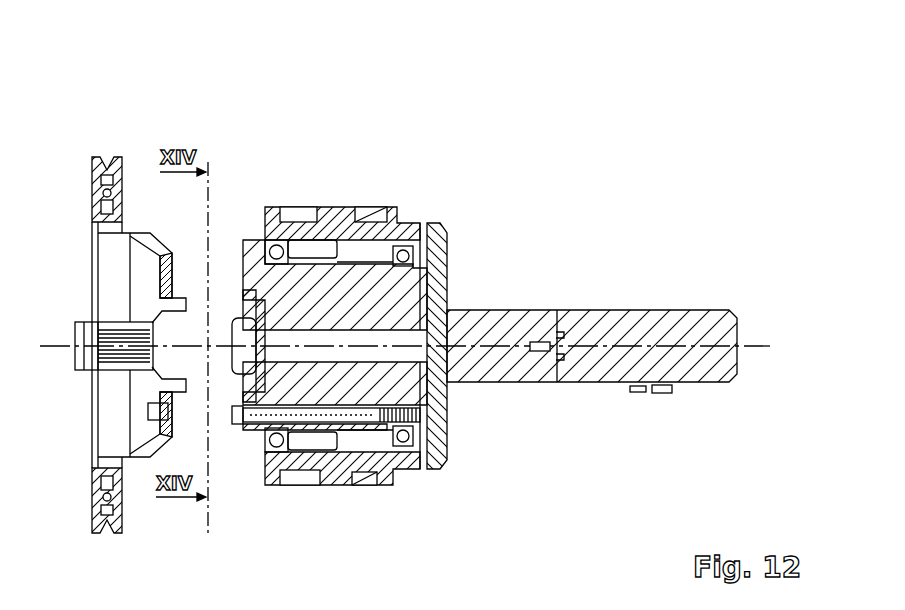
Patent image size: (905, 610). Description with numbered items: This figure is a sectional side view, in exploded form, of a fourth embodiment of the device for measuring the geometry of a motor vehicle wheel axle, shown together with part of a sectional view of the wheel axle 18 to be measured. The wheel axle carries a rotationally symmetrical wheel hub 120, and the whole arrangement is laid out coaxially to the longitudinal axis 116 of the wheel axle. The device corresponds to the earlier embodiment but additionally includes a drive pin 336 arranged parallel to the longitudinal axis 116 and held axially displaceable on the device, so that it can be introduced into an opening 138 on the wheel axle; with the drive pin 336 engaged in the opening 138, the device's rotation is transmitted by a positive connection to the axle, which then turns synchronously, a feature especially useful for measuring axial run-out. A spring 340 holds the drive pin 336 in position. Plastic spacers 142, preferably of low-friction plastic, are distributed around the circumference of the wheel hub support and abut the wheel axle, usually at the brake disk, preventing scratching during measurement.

The wheel axle 18 is at (110, 147).
The rotationally symmetrical wheel hub 120 is at (128, 457).
The opening 138 is at (160, 407).
The spacers 142 is at (238, 270).
The drive pin 336 is at (233, 410).
The spring 340 is at (432, 412).
The longitudinal axis 116 is at (752, 347).